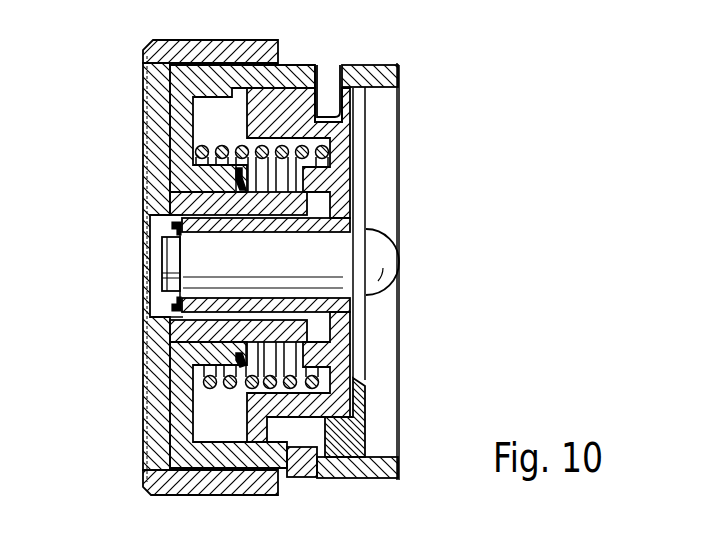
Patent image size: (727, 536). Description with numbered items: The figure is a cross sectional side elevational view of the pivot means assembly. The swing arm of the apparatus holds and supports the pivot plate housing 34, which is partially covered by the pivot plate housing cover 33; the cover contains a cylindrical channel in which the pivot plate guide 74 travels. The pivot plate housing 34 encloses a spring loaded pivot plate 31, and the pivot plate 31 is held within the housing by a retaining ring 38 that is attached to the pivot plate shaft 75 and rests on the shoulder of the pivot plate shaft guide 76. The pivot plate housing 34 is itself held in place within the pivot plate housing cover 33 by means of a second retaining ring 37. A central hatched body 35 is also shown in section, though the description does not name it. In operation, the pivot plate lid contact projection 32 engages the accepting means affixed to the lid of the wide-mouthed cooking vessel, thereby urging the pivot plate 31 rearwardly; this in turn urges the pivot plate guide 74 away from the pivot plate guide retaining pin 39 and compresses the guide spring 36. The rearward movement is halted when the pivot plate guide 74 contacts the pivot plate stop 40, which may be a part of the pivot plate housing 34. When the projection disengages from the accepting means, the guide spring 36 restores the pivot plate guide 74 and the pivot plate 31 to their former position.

The pivot plate 31 is at (357, 403).
The pivot plate lid contact projection 32 is at (385, 262).
The pivot plate housing cover 33 is at (210, 50).
The pivot plate housing 34 is at (304, 73).
The central body 35 is at (293, 97).
The guide spring 36 is at (210, 153).
The retaining ring 37 is at (237, 354).
The retaining ring 38 is at (172, 300).
The pivot plate guide retaining pin 39 is at (323, 80).
The pivot plate stop 40 is at (318, 452).
The pivot plate guide 74 is at (167, 263).
The pivot plate shaft 75 is at (208, 240).
The pivot plate shaft guide 76 is at (210, 318).